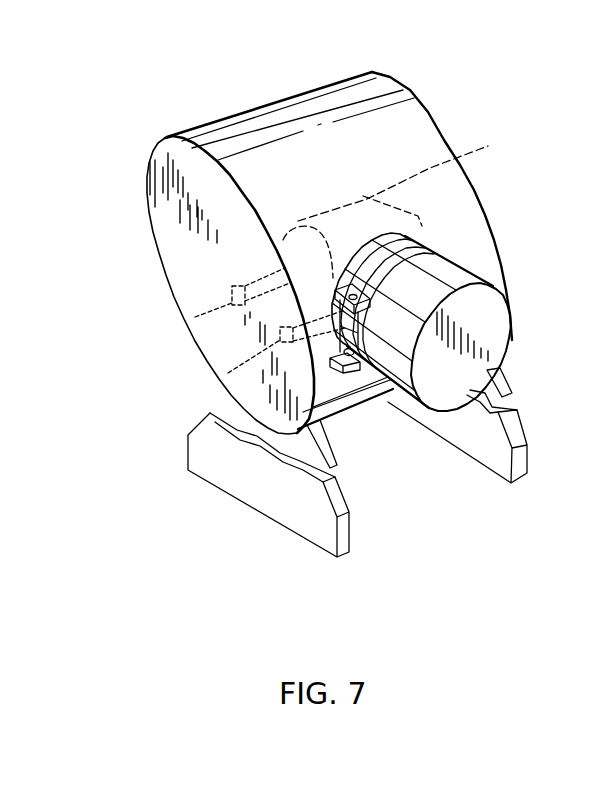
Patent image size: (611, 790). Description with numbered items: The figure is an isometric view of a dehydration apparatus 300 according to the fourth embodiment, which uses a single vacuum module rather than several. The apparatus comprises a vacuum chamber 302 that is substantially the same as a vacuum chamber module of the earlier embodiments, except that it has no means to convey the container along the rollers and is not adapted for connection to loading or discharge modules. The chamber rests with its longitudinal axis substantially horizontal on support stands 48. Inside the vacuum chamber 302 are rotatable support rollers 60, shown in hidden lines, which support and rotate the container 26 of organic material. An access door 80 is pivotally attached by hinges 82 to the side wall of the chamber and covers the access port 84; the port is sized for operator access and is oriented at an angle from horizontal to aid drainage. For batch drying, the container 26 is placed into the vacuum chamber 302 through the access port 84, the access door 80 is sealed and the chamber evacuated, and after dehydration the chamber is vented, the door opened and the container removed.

The dehydration apparatus 300 is at (263, 84).
The vacuum chamber 302 is at (332, 83).
The container 26 is at (403, 203).
The rotatable support rollers 60 is at (195, 317).
The access door 80 is at (495, 325).
The access port 84 is at (395, 237).
The hinges 82 is at (340, 290).
The support stands 48 is at (528, 458).